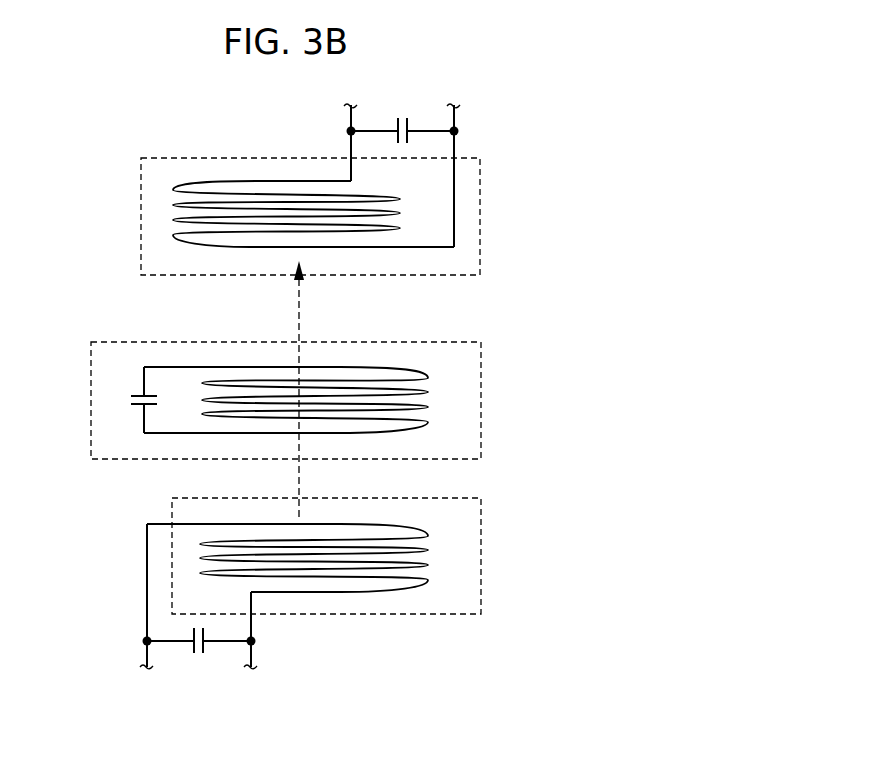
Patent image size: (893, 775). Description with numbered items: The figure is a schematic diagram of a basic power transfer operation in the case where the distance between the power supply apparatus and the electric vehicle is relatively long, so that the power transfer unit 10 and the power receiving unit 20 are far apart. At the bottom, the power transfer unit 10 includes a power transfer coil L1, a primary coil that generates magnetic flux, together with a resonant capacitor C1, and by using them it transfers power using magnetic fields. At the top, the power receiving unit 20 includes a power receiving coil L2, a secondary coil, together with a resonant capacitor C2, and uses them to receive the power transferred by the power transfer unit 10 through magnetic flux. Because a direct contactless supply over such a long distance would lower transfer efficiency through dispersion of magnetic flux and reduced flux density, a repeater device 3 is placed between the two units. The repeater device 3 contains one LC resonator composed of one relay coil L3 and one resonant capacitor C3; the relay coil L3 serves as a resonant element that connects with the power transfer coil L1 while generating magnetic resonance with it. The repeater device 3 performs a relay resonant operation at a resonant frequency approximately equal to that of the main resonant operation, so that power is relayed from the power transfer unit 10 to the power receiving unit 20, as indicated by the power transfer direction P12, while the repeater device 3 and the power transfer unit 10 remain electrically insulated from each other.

The power receiving unit 20 is at (481, 207).
The power receiving coil L2 is at (173, 204).
The resonant capacitor C2 is at (412, 121).
The power transmission direction P12 is at (301, 306).
The repeater device 3 is at (482, 398).
The relay coil L3 is at (200, 386).
The resonant capacitor C3 is at (131, 400).
The power transfer unit 10 is at (482, 551).
The power transfer coil L1 is at (200, 543).
The resonant capacitor C1 is at (192, 632).